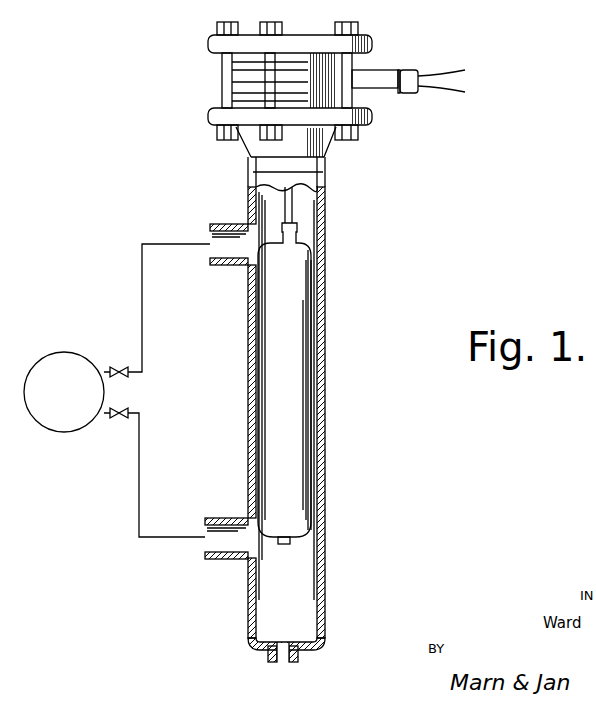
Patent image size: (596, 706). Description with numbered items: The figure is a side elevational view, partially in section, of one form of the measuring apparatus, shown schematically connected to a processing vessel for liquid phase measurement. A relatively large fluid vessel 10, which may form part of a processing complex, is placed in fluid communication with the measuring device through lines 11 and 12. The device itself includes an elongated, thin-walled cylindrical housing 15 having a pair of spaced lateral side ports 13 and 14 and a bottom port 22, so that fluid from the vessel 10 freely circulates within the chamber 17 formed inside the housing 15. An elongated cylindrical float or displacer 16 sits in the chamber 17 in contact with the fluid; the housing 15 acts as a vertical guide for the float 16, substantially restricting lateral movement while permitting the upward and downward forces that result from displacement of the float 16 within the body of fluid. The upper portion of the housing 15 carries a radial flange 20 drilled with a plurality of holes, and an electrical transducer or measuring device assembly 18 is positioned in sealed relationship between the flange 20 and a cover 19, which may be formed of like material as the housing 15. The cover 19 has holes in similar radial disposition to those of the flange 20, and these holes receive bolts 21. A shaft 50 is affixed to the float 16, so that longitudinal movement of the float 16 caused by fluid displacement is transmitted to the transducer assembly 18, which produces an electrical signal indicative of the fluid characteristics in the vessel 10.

The fluid vessel 10 is at (50, 353).
The line 11 is at (142, 313).
The line 12 is at (138, 460).
The lateral side port 13 is at (225, 265).
The lateral side port 14 is at (225, 560).
The cylindrical housing 15 is at (327, 345).
The float 16 is at (300, 460).
The chamber 17 is at (297, 594).
The electrical transducer assembly 18 is at (377, 63).
The cover 19 is at (210, 45).
The radial flange 20 is at (208, 115).
The bolts 21 is at (247, 97).
The bottom port 22 is at (300, 658).
The shaft 50 is at (293, 208).